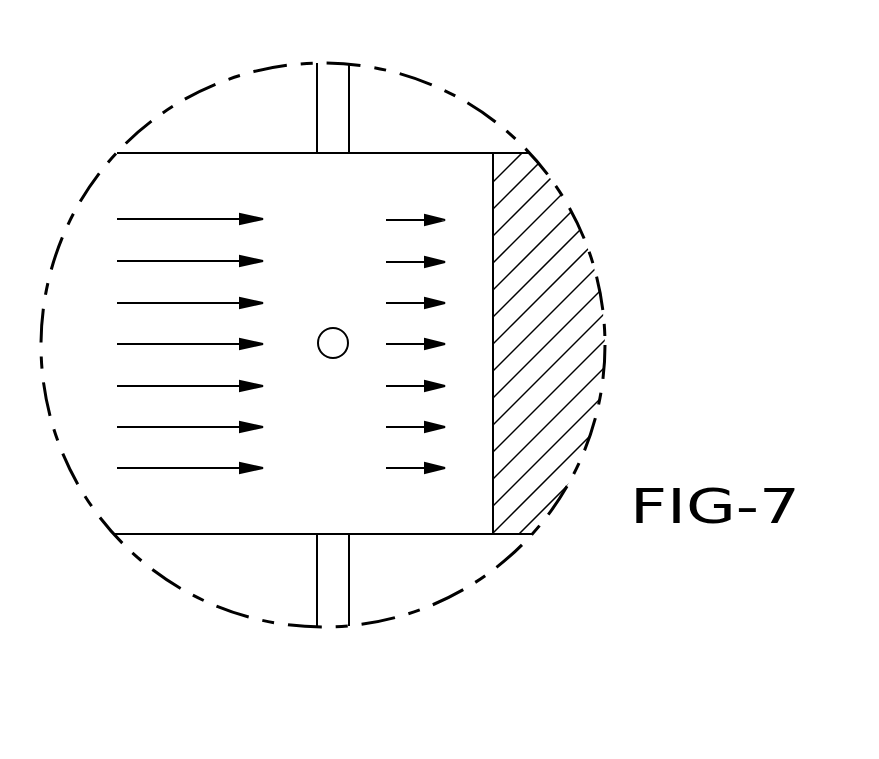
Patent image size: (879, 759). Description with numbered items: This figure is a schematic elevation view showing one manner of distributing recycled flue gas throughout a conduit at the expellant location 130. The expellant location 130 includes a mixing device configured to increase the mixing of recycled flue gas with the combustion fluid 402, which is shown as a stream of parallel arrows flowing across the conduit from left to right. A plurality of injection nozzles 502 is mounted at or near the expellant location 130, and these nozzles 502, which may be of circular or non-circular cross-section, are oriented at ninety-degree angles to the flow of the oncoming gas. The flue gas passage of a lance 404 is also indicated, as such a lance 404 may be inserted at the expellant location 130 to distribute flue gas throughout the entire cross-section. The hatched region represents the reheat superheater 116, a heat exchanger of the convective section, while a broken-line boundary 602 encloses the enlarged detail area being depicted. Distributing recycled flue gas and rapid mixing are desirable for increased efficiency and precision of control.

The reheat superheater 116 is at (557, 313).
The expellant location 130 is at (349, 108).
The combustion fluid 402 is at (156, 218).
The lance 404 is at (288, 153).
The injection nozzles 502 is at (349, 153).
The detail boundary 602 is at (520, 143).